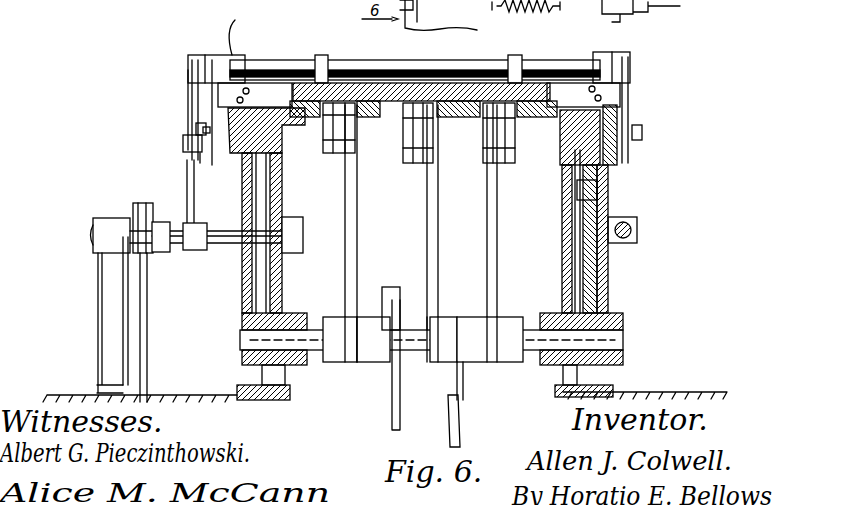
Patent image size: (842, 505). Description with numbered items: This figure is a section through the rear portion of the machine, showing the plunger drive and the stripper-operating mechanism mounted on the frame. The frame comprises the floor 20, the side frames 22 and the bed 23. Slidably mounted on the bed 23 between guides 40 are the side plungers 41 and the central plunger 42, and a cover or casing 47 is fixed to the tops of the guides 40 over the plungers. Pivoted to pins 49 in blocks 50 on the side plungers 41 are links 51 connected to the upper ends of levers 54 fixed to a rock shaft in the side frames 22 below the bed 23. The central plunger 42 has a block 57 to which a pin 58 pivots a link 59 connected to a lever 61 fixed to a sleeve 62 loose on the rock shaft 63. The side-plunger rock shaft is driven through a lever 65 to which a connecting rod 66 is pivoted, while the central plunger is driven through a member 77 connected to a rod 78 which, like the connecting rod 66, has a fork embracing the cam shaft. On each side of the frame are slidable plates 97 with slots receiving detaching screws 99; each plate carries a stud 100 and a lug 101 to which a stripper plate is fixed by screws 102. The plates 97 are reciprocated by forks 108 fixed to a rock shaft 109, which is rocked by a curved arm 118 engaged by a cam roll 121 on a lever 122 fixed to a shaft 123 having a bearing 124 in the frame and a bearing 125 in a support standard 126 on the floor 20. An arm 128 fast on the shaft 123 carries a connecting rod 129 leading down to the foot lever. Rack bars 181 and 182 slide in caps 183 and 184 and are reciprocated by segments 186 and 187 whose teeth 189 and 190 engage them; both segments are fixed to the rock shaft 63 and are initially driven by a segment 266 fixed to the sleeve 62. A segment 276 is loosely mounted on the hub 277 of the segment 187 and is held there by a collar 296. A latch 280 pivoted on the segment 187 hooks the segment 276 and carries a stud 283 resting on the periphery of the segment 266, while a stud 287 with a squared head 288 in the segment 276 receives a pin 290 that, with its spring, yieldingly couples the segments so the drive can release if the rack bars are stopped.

The floor 20 is at (698, 392).
The side frames 22 is at (290, 382).
The bed 23 is at (463, 118).
The guides 40 is at (300, 62).
The side plungers 41 is at (335, 90).
The central plunger 42 is at (430, 88).
The cover or casing 47 is at (458, 88).
The pins 49 is at (352, 145).
The blocks 50 is at (330, 118).
The links 51 is at (340, 165).
The levers 54 is at (357, 222).
The block 57 is at (430, 130).
The pin 58 is at (405, 140).
The link 59 is at (413, 165).
The lever 61 is at (438, 238).
The sleeve 62 is at (500, 313).
The rock shaft 63 is at (623, 336).
The lever 65 is at (463, 384).
The connecting rod 66 is at (460, 430).
The arm 77 is at (388, 300).
The rod 78 is at (392, 404).
The slidable plates 97 is at (210, 118).
The detaching screws 99 is at (612, 85).
The studs 100 is at (190, 124).
The lug 101 is at (225, 55).
The screws 102 is at (240, 98).
The forks 108 is at (212, 118).
The rock shaft 109 is at (248, 29).
The curved arm 118 is at (188, 110).
The cam roll 121 is at (183, 143).
The lever 122 is at (187, 180).
The shaft 123 is at (230, 243).
The bearing 124 is at (295, 228).
The bearing 125 is at (105, 218).
The support standard 126 is at (112, 316).
The arm 128 is at (158, 252).
The connecting rod 129 is at (147, 320).
The rack bar 181 is at (262, 125).
The rack bar 182 is at (612, 160).
The cap 183 is at (205, 160).
The cap 184 is at (600, 170).
The segment 186 is at (246, 290).
The segment 187 is at (603, 180).
The teeth 189 is at (236, 160).
The teeth 190 is at (508, 152).
The segment 266 is at (578, 249).
The segment 276 is at (608, 288).
The hub 277 is at (623, 318).
The latch 280 is at (600, 190).
The stud 283 is at (497, 208).
The stud 287 is at (560, 228).
The squared head 288 is at (640, 240).
The pin 290 is at (627, 233).
The collar 296 is at (623, 366).